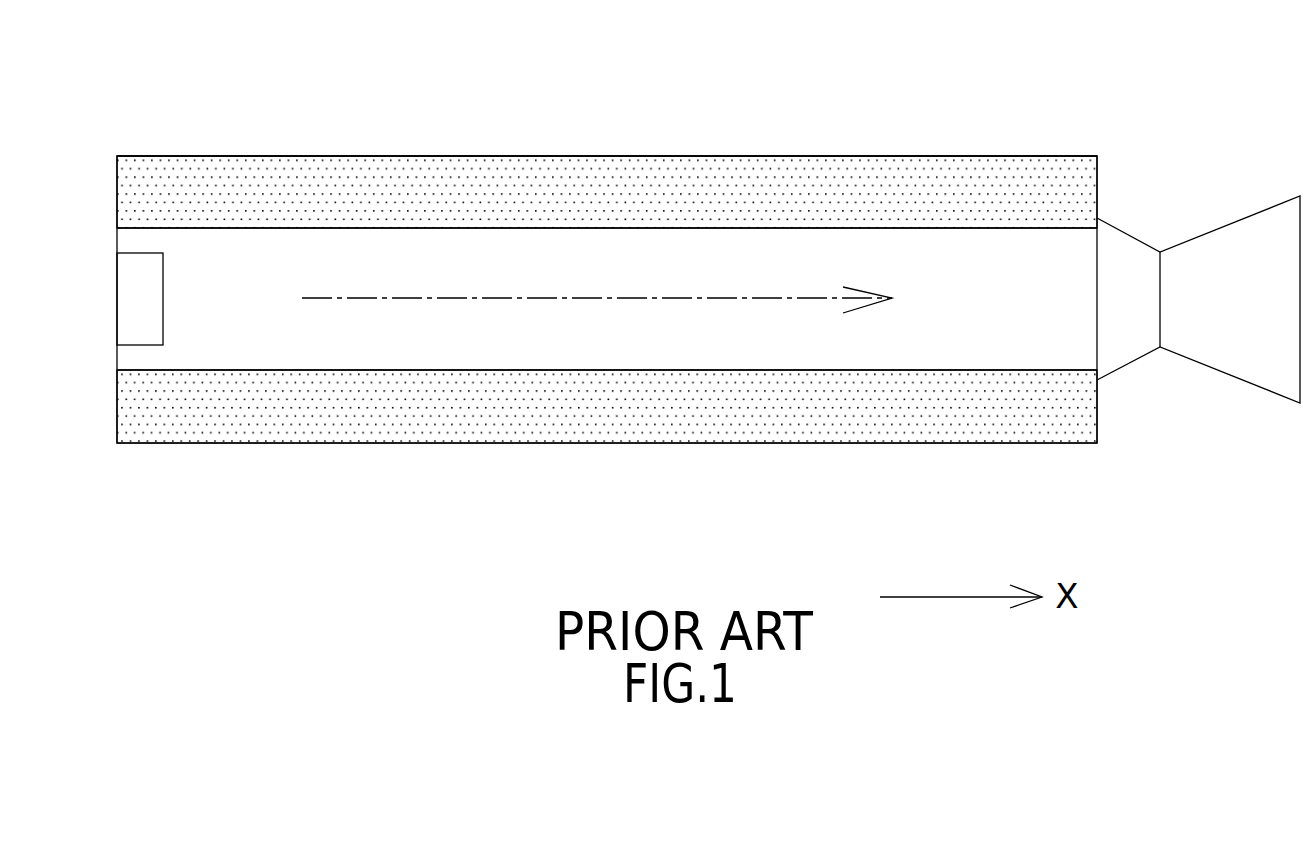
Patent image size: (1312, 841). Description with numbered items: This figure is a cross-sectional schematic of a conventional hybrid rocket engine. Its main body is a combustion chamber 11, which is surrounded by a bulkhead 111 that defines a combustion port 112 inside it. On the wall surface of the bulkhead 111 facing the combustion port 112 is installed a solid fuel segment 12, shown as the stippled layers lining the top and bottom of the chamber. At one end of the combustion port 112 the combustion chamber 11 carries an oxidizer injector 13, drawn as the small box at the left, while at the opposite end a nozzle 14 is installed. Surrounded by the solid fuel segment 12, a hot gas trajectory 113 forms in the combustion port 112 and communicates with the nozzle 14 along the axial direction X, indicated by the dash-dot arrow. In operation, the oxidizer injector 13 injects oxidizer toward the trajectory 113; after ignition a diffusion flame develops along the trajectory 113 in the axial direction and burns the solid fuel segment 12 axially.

The combustion chamber 11 is at (318, 142).
The bulkhead 111 is at (445, 157).
The combustion port 112 is at (597, 215).
The hot gas trajectory 113 is at (747, 297).
The solid fuel segment 12 is at (945, 155).
The oxidizer injector 13 is at (138, 280).
The nozzle 14 is at (1215, 260).